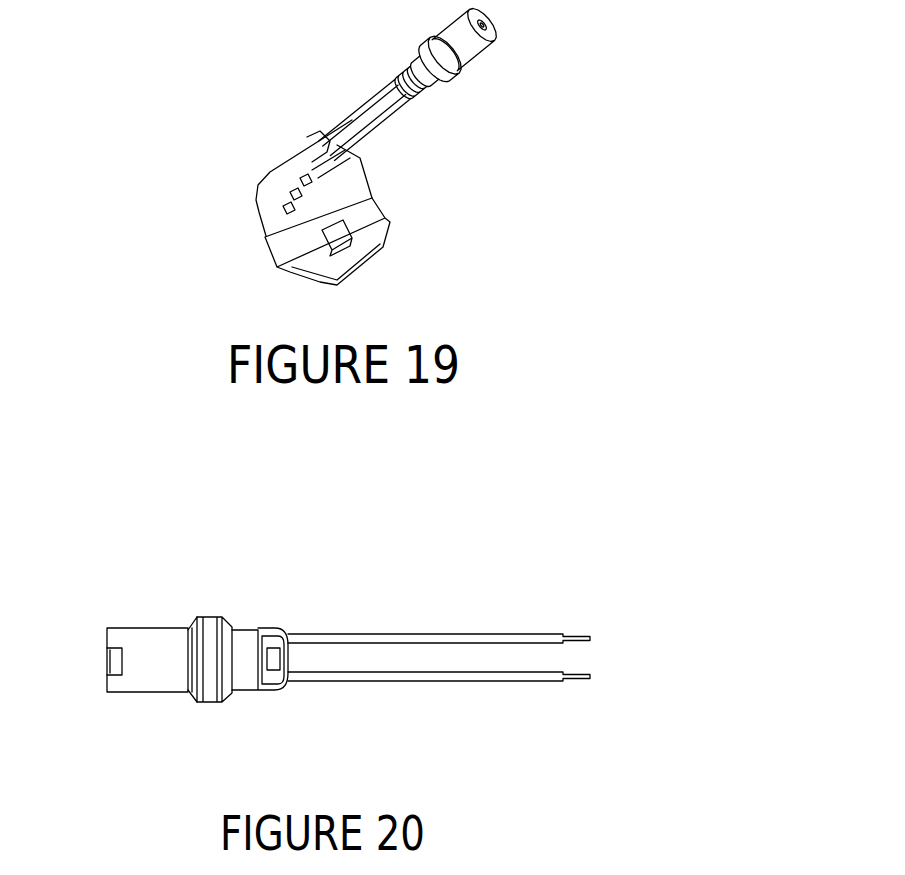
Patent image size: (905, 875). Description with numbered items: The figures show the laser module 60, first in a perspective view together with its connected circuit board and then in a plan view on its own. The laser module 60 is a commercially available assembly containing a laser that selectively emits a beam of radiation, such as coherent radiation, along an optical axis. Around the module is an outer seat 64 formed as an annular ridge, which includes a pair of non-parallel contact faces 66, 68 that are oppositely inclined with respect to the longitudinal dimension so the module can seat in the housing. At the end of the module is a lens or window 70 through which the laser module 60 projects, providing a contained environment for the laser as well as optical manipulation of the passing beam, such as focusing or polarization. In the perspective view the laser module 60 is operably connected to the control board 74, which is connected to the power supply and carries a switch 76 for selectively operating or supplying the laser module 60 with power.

In FIG. 19, the laser module 60 is at (487, 43).
In FIG. 20, the laser module 60 is at (143, 600).
In FIG. 19, the outer seat 64 is at (425, 45).
In FIG. 20, the outer seat 64 is at (210, 703).
In FIG. 20, the contact face 66 is at (225, 622).
In FIG. 20, the contact face 68 is at (191, 626).
In FIG. 20, the lens or window 70 is at (110, 652).
In FIG. 19, the control board 74 is at (378, 253).
In FIG. 19, the switch 76 is at (331, 247).